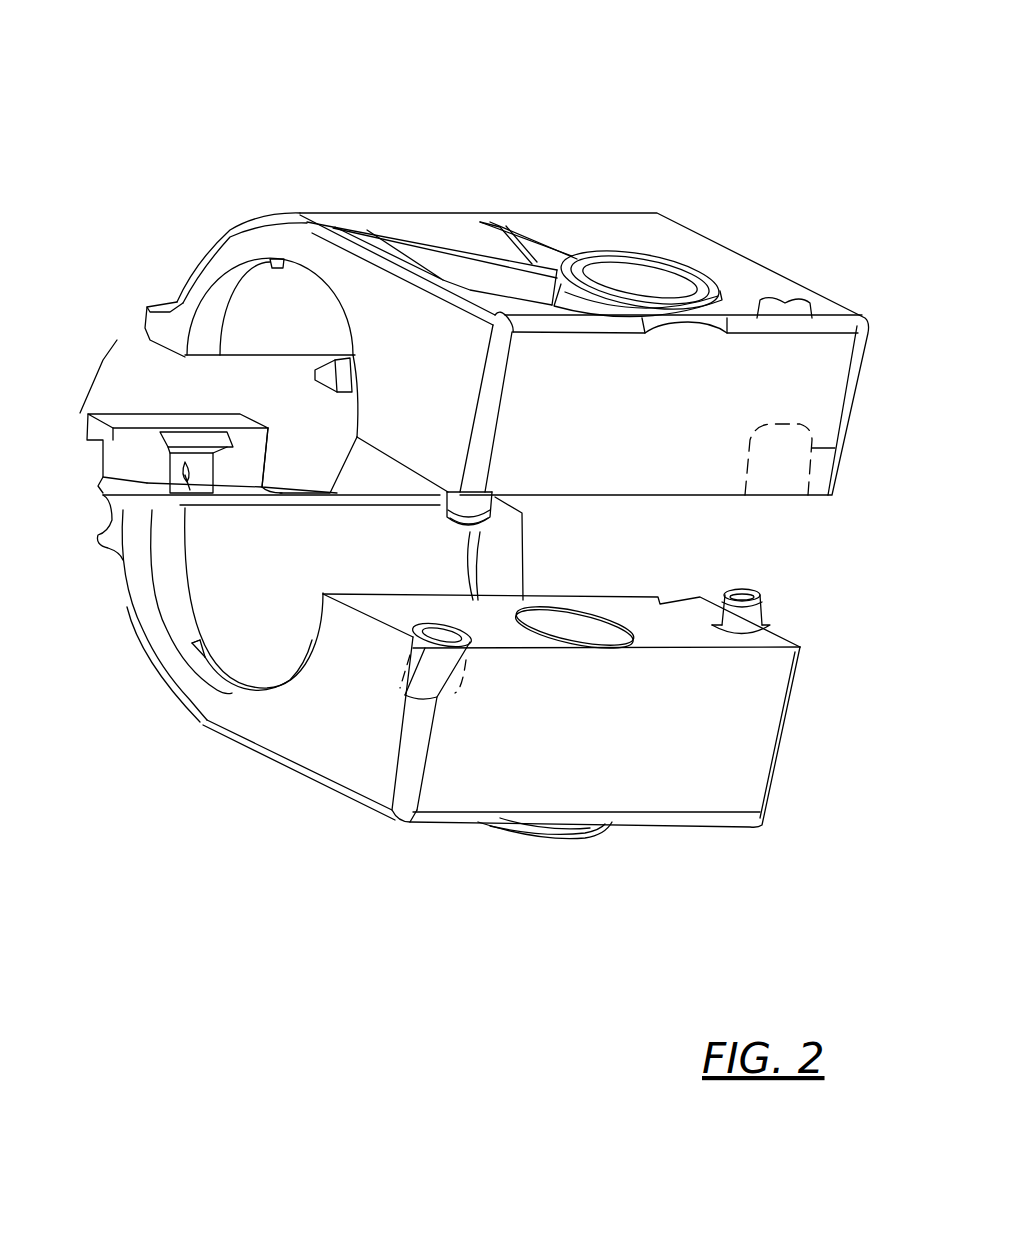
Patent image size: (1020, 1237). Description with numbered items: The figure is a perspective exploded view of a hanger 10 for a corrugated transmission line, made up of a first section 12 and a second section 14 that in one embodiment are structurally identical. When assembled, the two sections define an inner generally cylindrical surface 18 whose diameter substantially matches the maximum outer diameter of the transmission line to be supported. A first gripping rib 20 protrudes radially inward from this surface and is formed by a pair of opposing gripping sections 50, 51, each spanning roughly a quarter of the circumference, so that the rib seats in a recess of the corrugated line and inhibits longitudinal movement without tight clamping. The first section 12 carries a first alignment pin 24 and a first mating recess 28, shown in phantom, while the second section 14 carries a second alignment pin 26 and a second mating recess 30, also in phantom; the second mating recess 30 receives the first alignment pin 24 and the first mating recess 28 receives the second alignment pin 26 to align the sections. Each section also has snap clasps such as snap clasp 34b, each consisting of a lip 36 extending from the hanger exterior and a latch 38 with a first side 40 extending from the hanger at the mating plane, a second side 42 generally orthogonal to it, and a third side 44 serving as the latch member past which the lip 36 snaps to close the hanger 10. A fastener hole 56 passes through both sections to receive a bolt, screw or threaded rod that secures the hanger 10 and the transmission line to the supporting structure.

The hanger 10 is at (460, 132).
The first section 12 is at (720, 790).
The second section 14 is at (800, 381).
The inner generally cylindrical surface 18 is at (240, 356).
The first gripping rib 20 is at (283, 278).
The first alignment pin 24 is at (760, 608).
The second alignment pin 26 is at (482, 508).
The first mating recess 28 is at (437, 630).
The second mating recess 30 is at (812, 452).
The snap clasp 34b is at (87, 376).
The lip 36 is at (158, 300).
The latch 38 is at (285, 465).
The first side 40 is at (108, 500).
The second side 42 is at (103, 445).
The third side 44 is at (210, 440).
The gripping section 50 is at (207, 665).
The gripping section 51 is at (275, 259).
The fastener hole 56 is at (705, 300).